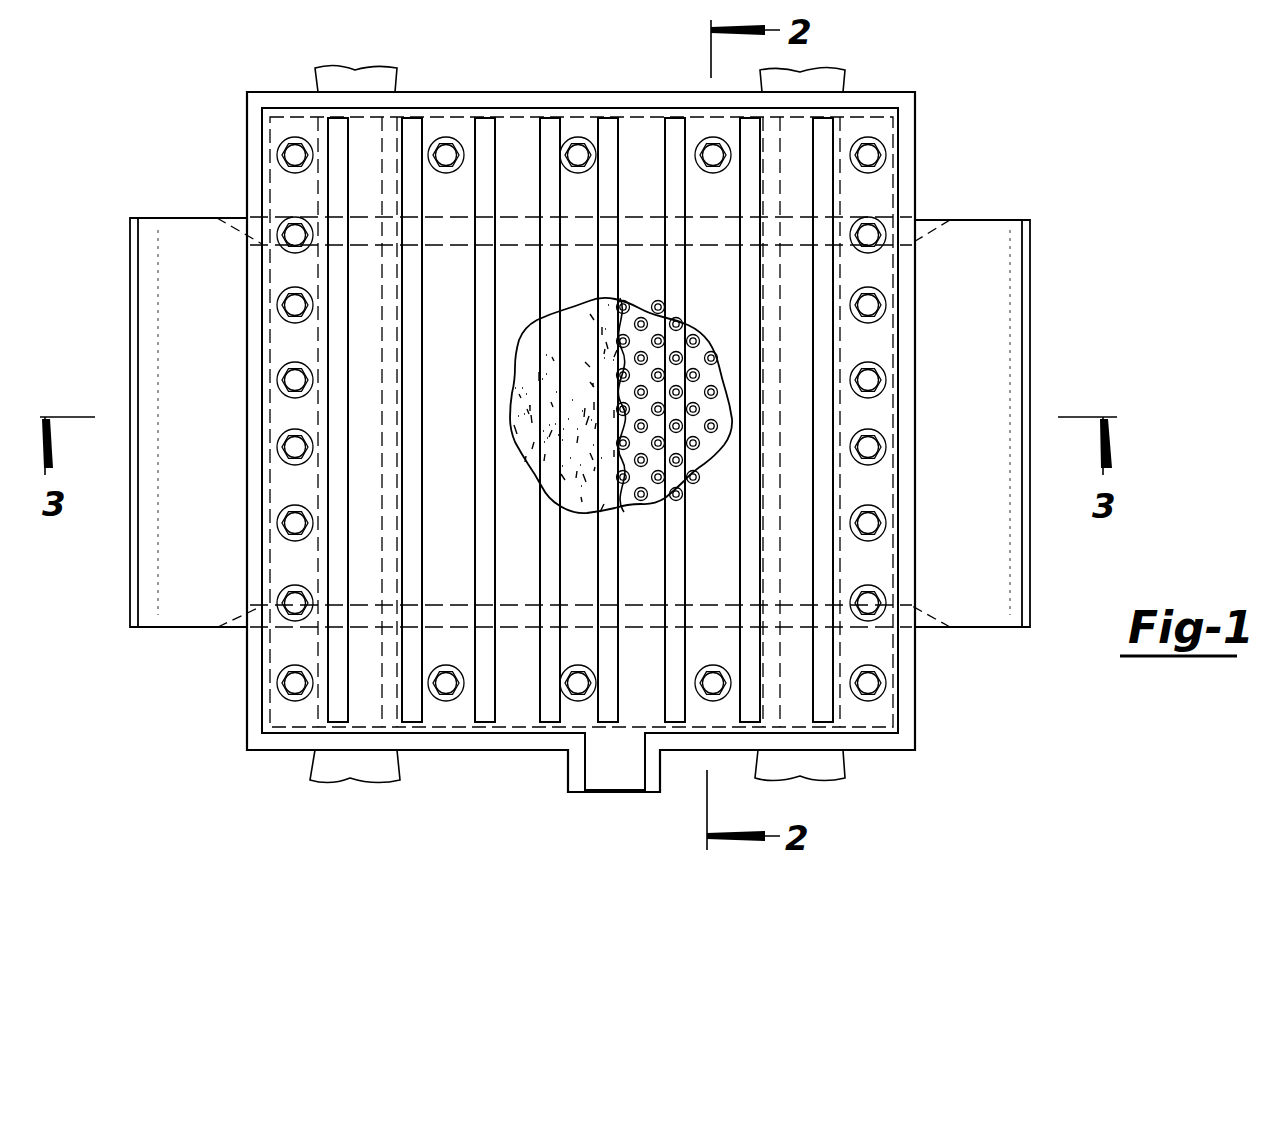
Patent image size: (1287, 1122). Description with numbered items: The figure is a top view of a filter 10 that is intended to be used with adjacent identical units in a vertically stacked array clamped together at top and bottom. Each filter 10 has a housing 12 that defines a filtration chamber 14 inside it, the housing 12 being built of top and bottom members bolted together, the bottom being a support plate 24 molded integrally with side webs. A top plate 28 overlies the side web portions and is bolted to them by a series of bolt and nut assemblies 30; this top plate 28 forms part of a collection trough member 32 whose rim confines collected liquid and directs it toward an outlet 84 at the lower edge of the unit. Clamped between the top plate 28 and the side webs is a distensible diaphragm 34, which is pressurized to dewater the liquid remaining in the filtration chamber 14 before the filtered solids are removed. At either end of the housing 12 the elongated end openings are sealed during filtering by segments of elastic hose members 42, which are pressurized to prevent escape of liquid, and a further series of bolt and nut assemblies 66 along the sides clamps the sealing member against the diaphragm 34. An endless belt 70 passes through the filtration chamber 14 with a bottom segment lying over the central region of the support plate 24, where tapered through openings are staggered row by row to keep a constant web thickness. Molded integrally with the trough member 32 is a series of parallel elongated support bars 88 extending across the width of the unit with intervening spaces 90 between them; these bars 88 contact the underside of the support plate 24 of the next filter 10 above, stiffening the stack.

The filter 10 is at (226, 690).
The housing 12 is at (922, 172).
The filtration chamber 14 is at (697, 338).
The support plate 24 is at (674, 386).
The top plate 28 is at (652, 178).
The bolt and nut assemblies 30 is at (578, 137).
The collection trough member 32 is at (588, 92).
The distensible diaphragm 34 is at (572, 397).
The elastic hose members 42 is at (395, 82).
The bolt and nut assemblies 66 is at (293, 368).
The endless belt 70 is at (184, 216).
The outlet 84 is at (617, 770).
The elongated support bars 88 is at (420, 298).
The intervening spaces 90 is at (462, 410).